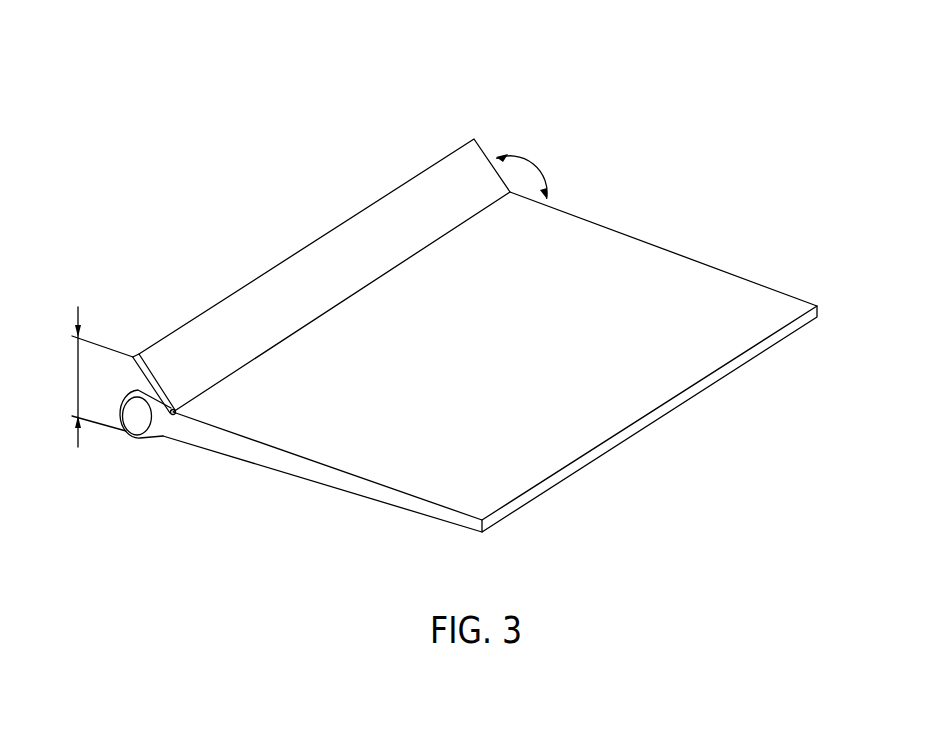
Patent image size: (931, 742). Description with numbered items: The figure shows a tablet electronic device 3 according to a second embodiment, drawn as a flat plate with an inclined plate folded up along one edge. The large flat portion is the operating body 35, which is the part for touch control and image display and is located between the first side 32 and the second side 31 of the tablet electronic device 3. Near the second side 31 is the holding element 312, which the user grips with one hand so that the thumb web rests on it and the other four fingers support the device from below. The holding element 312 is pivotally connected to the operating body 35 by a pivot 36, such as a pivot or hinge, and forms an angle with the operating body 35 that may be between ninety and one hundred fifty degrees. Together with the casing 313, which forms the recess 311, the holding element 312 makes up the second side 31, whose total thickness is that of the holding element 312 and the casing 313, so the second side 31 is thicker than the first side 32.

The tablet electronic device 3 is at (240, 217).
The second side 31 is at (142, 270).
The recess 311 is at (150, 433).
The holding element 312 is at (223, 335).
The casing 313 is at (149, 393).
The first side 32 is at (693, 392).
The operating body 35 is at (705, 282).
The pivot 36 is at (172, 416).